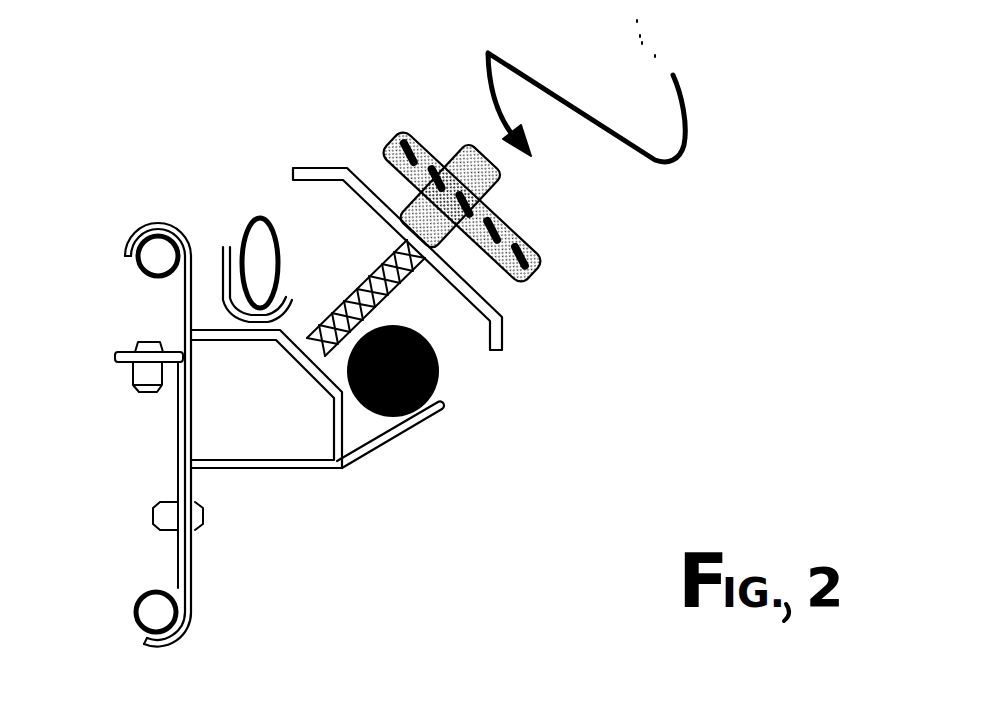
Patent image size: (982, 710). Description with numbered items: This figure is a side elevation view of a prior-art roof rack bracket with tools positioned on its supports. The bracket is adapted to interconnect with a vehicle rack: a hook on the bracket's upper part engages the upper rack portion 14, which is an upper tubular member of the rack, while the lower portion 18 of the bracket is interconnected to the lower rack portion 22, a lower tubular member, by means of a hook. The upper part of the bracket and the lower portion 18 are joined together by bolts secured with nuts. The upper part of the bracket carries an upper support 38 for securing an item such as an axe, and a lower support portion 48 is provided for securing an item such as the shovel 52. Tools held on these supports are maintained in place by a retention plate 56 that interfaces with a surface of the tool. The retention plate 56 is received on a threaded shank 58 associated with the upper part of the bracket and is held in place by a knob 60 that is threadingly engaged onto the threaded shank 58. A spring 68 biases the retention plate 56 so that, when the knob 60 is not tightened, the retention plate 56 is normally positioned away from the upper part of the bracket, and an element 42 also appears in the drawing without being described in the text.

The upper rack portion 14 is at (147, 260).
The lower portion 18 is at (183, 607).
The lower rack portion 22 is at (137, 593).
The upper support 38 is at (220, 240).
The bushing 42 is at (253, 220).
The lower support portion 48 is at (422, 435).
The shovel 52 is at (440, 372).
The retention plate 56 is at (327, 162).
The threaded shank 58 is at (357, 292).
The knob 60 is at (518, 212).
The spring 68 is at (383, 277).